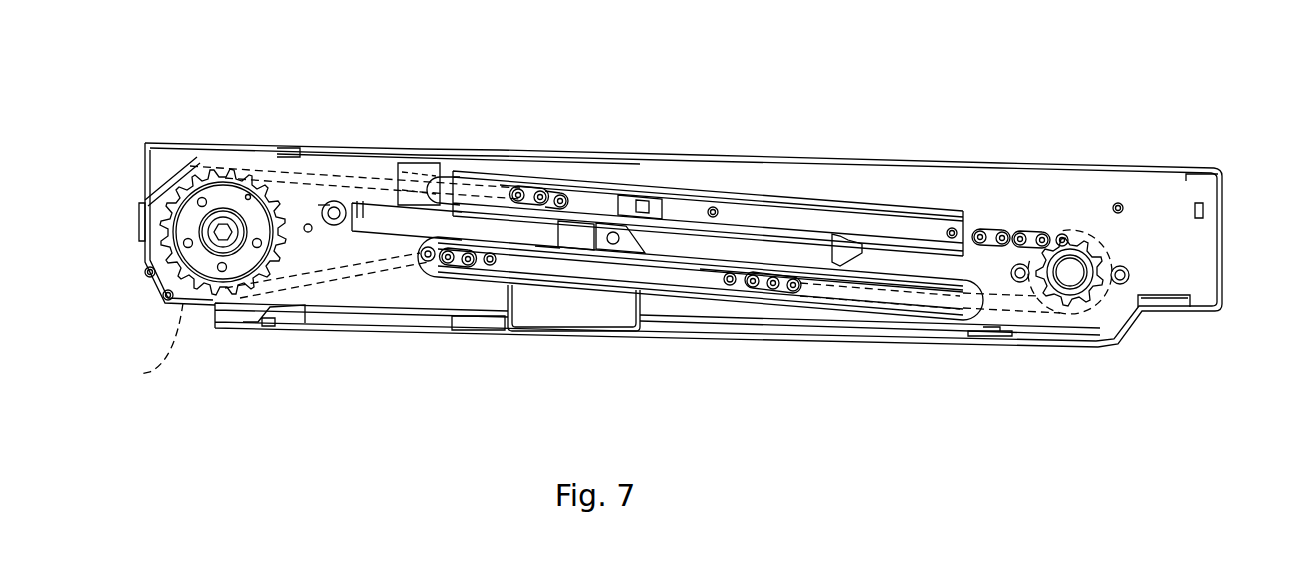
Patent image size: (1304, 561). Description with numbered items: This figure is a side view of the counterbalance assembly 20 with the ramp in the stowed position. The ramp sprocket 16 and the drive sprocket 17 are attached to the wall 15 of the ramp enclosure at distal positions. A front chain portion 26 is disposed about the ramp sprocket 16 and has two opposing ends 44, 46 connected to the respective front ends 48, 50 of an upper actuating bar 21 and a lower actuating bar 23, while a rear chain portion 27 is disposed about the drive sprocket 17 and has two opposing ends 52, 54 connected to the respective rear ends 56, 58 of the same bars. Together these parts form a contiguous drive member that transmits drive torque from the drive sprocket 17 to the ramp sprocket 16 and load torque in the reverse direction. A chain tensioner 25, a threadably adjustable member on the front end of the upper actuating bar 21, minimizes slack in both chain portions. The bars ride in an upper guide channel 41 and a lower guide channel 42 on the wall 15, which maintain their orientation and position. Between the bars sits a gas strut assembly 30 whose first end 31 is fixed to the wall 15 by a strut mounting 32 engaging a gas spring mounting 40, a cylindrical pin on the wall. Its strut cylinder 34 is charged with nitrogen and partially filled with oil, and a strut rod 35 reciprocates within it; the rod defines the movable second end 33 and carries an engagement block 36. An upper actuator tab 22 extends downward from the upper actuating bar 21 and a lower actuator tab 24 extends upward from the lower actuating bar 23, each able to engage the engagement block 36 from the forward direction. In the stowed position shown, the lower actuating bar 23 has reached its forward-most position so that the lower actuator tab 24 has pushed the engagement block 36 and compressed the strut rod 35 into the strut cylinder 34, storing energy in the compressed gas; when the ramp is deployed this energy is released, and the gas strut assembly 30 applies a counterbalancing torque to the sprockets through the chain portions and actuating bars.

The wall 15 is at (1205, 258).
The ramp sprocket 16 is at (232, 170).
The drive sprocket 17 is at (1103, 293).
The counterbalance assembly 20 is at (708, 162).
The upper actuating bar 21 is at (748, 212).
The upper actuator tab 22 is at (846, 238).
The lower actuating bar 23 is at (700, 354).
The lower actuator tab 24 is at (638, 260).
The chain tensioner 25 is at (612, 195).
The front chain portion 26 is at (481, 184).
The rear chain portion 27 is at (752, 287).
The gas strut assembly 30 is at (331, 240).
The first end 31 is at (348, 238).
The strut mounting 32 is at (335, 202).
The second end 33 is at (582, 250).
The strut cylinder 34 is at (402, 210).
The strut rod 35 is at (548, 250).
The engagement block 36 is at (592, 250).
The gas spring mounting 40 is at (323, 213).
The upper guide channel 41 is at (470, 178).
The lower guide channel 42 is at (887, 306).
The end of front chain portion 44 is at (541, 190).
The end of front chain portion 46 is at (430, 262).
The front end of upper actuating bar 48 is at (573, 192).
The front end of lower actuating bar 50 is at (488, 266).
The end of rear chain portion 52 is at (981, 229).
The end of rear chain portion 54 is at (773, 289).
The rear end of upper actuating bar 56 is at (952, 228).
The rear end of lower actuating bar 58 is at (737, 285).